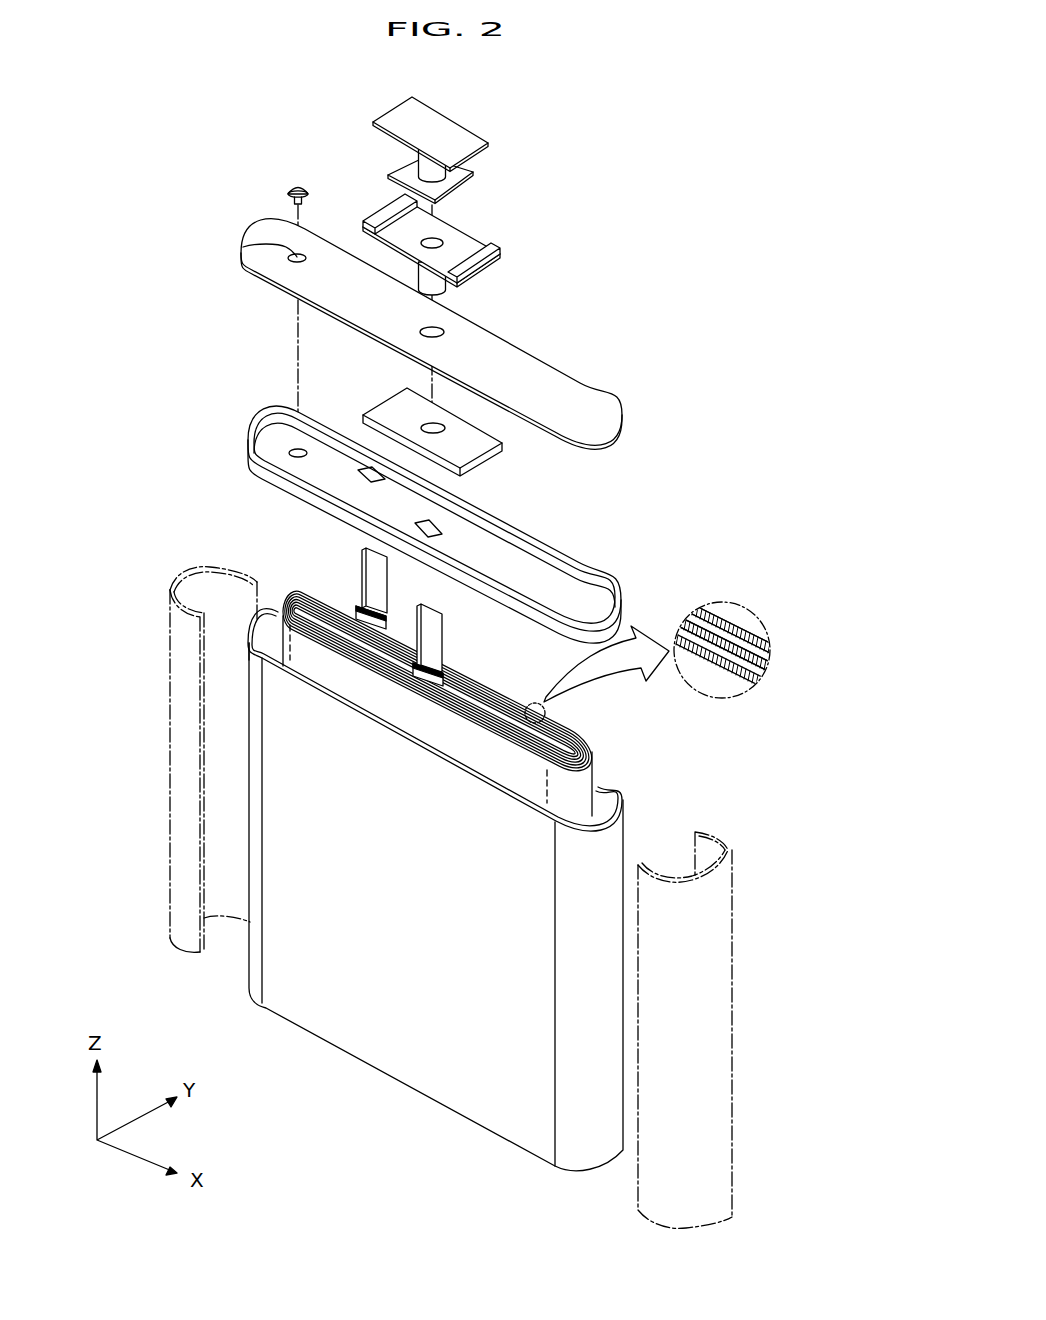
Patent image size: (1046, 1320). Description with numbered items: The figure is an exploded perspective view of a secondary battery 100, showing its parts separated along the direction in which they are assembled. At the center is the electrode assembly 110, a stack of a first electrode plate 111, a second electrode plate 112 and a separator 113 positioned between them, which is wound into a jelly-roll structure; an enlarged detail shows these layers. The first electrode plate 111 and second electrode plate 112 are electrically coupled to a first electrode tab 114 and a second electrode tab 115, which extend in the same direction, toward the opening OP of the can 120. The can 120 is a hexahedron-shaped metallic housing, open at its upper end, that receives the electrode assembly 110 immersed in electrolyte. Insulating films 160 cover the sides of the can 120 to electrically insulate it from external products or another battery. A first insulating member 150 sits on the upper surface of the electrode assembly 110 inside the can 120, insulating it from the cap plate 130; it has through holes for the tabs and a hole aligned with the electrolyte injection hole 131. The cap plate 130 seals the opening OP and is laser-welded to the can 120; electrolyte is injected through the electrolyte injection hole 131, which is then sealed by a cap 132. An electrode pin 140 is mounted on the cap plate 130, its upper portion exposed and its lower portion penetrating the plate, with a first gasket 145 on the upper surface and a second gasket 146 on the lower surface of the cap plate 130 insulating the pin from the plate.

The secondary battery 100 is at (660, 167).
The electrode assembly 110 is at (590, 740).
The first electrode plate 111 is at (740, 672).
The second electrode plate 112 is at (770, 652).
The separator 113 is at (758, 668).
The first electrode tab 114 is at (444, 648).
The second electrode tab 115 is at (369, 578).
The can 120 is at (476, 1116).
The cap plate 130 is at (575, 385).
The electrolyte injection hole 131 is at (247, 240).
The cap 132 is at (296, 187).
The electrode pin 140 is at (470, 131).
The first gasket 145 is at (483, 245).
The second gasket 146 is at (388, 408).
The first insulating member 150 is at (612, 590).
The insulating films 160 is at (178, 840).
The opening OP is at (274, 647).